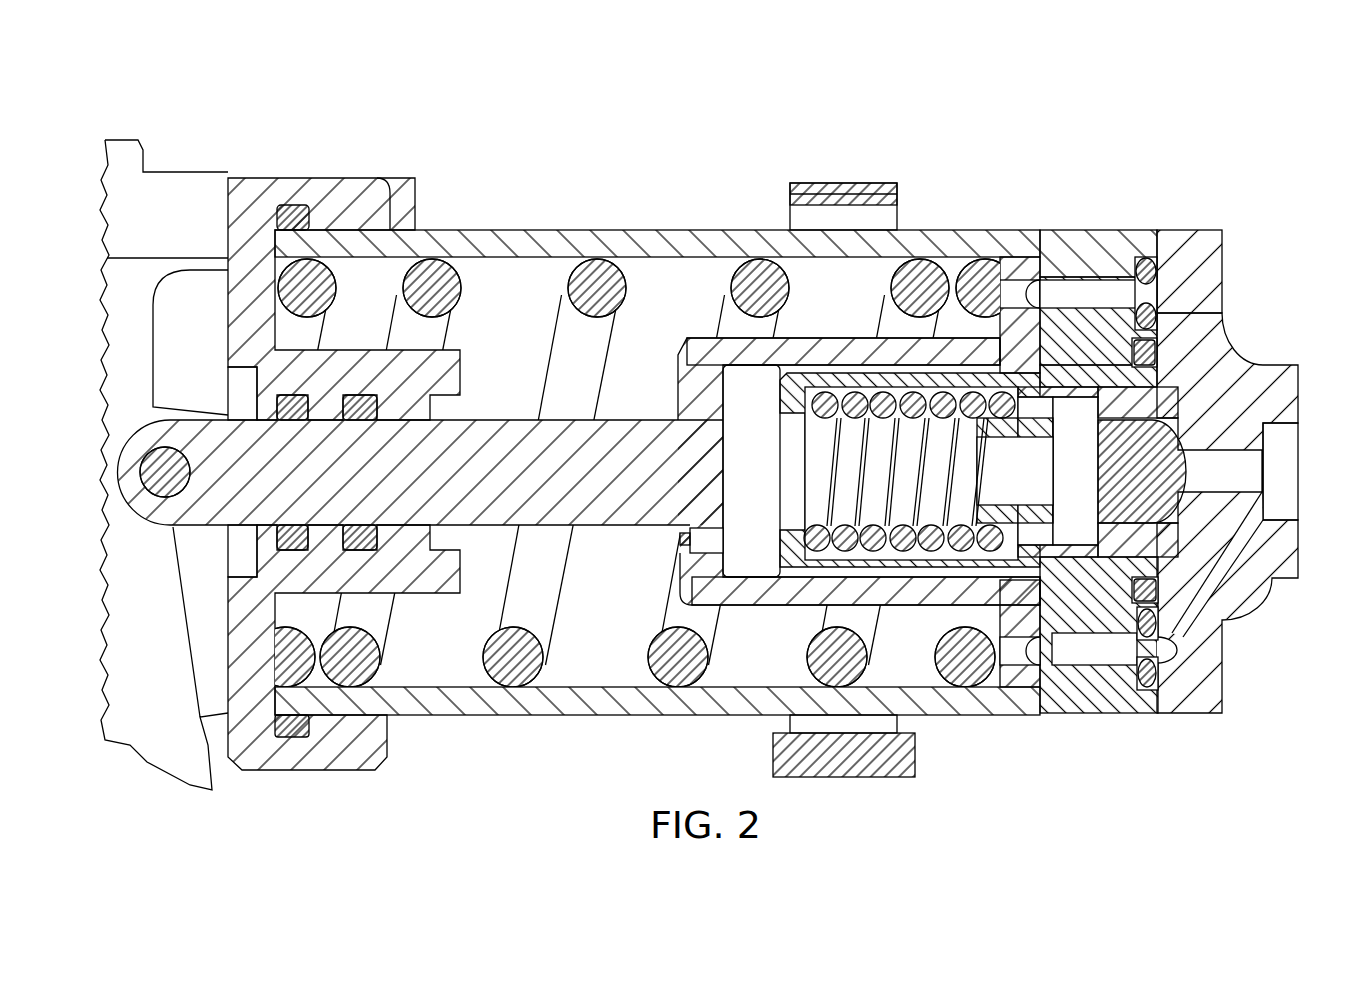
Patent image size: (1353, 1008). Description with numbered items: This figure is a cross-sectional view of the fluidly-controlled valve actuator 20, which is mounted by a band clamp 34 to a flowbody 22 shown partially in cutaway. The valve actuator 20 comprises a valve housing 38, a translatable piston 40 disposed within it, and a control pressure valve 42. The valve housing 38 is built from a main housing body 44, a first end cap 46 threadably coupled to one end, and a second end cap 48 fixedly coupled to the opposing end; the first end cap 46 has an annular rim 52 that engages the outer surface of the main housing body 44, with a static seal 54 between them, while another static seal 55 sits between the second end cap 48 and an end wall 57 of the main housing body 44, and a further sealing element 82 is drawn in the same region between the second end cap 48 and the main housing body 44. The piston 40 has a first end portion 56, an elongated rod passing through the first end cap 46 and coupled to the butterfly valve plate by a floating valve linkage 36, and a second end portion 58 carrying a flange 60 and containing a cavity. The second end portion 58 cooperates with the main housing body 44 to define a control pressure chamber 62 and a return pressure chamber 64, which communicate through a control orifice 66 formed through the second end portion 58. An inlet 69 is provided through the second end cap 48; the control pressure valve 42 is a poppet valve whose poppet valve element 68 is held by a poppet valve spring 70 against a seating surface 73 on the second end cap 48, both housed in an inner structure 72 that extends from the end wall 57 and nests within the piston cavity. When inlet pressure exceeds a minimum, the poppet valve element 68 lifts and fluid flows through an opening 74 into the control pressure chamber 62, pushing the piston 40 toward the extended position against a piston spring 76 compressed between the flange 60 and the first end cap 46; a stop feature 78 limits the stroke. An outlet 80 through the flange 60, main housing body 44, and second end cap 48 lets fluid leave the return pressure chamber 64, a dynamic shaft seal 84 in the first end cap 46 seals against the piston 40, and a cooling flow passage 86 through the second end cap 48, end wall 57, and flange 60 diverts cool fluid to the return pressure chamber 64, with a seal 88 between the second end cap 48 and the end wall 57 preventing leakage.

The valve actuator 20 is at (1017, 146).
The flowbody 22 is at (106, 672).
The band clamp 34 is at (847, 183).
The floating valve linkage 36 is at (136, 476).
The valve housing 38 is at (585, 716).
The piston 40 is at (640, 420).
The control pressure valve 42 is at (1152, 412).
The main housing body 44 is at (660, 230).
The first end cap 46 is at (248, 186).
The second end cap 48 is at (1186, 234).
The annular rim 52 is at (357, 192).
The static seal 54 is at (292, 740).
The static seal 55 is at (1134, 590).
The first end portion 56 is at (265, 489).
The end wall 57 is at (1103, 363).
The second end portion 58 is at (785, 606).
The flange 60 is at (1014, 262).
The control pressure chamber 62 is at (764, 485).
The return pressure chamber 64 is at (631, 598).
The control orifice 66 is at (692, 530).
The poppet valve element 68 is at (1142, 471).
The inlet 69 is at (1266, 472).
The poppet valve spring 70 is at (975, 470).
The inner structure 72 is at (836, 372).
The seating surface 73 is at (1227, 513).
The opening 74 is at (781, 440).
The piston spring 76 is at (494, 656).
The stop feature 78 is at (419, 582).
The outlet 80 is at (1082, 292).
The seal 82 is at (1146, 252).
The dynamic shaft seal 84 is at (280, 536).
The cooling flow passage 86 is at (1225, 586).
The seal 88 is at (1145, 692).